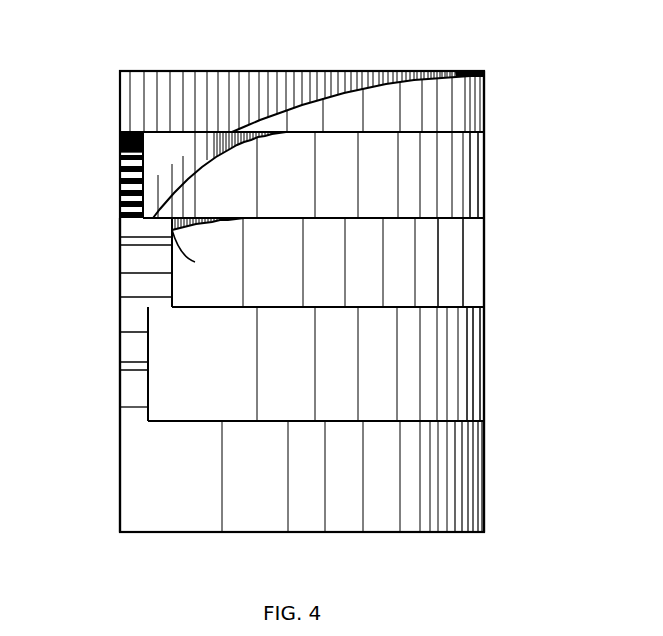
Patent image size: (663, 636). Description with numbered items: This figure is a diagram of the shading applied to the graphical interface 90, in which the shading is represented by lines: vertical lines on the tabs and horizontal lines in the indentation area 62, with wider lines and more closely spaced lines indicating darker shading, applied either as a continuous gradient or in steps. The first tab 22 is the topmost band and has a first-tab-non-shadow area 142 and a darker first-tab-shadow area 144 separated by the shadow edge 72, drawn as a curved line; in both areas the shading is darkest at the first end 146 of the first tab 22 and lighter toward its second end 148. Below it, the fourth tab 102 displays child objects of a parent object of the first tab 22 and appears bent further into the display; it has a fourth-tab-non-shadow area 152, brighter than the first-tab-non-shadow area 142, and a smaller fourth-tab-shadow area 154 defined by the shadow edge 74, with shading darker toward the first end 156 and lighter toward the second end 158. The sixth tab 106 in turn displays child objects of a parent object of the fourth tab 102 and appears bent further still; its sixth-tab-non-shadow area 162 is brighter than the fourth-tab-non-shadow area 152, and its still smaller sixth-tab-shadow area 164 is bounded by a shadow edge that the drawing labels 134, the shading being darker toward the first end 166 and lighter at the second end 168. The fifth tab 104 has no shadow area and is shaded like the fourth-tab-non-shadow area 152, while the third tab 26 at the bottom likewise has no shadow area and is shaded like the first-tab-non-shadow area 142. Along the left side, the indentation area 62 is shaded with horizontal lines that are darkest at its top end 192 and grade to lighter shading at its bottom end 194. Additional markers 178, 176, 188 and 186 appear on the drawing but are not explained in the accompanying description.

The graphical interface 90 is at (108, 40).
The second end of the first tab 148 is at (120, 93).
The first-tab-shadow area 144 is at (221, 98).
The shadow edge 72 is at (291, 102).
The first-tab-non-shadow area 142 is at (421, 108).
The first tab 22 is at (497, 96).
The first end of the first tab 146 is at (486, 113).
The top end of the indentation area 192 is at (120, 140).
The first end of the fourth tab 156 is at (485, 156).
The fourth-tab-shadow area 154 is at (190, 148).
The second end of the fourth tab 158 is at (123, 152).
The shadow edge 74 is at (165, 186).
The fourth tab 102 is at (494, 176).
The fourth-tab-non-shadow area 152 is at (485, 200).
The indentation area 62 is at (128, 240).
The lamination 178 is at (128, 364).
The bottom end of the indentation area 194 is at (128, 421).
The first end of the sixth tab 166 is at (485, 291).
The sixth-tab-shadow area 164 is at (200, 228).
The interface 134 is at (185, 228).
The second end of the sixth tab 168 is at (200, 257).
The sixth-tab-non-shadow area 162 is at (446, 241).
The sixth tab 106 is at (497, 260).
The fifth tab 104 is at (497, 330).
The fourth layer outer region 176 is at (485, 385).
The base layer side 188 is at (120, 478).
The third tab 26 is at (498, 448).
The base layer outer region 186 is at (485, 502).